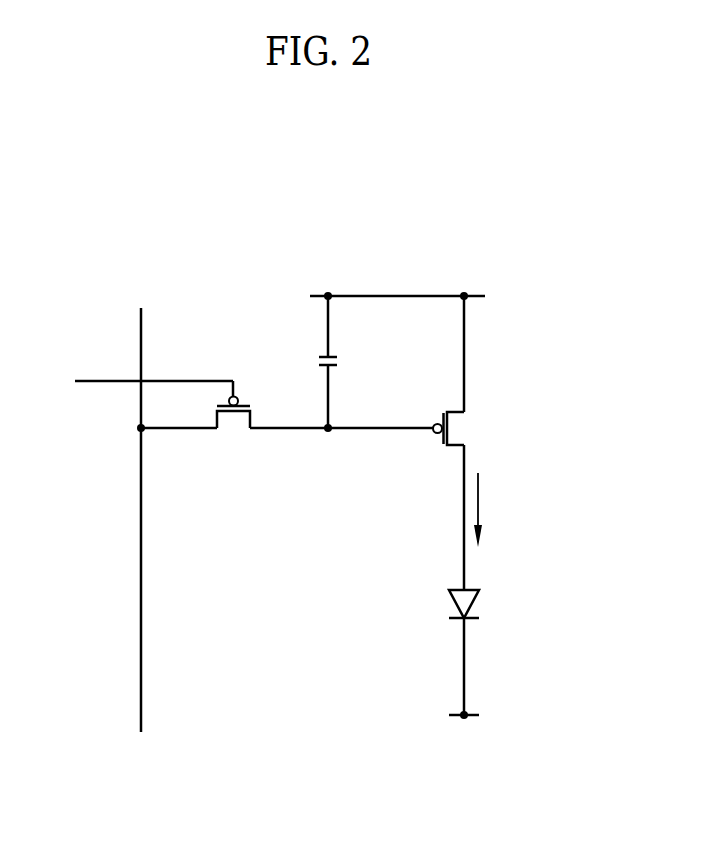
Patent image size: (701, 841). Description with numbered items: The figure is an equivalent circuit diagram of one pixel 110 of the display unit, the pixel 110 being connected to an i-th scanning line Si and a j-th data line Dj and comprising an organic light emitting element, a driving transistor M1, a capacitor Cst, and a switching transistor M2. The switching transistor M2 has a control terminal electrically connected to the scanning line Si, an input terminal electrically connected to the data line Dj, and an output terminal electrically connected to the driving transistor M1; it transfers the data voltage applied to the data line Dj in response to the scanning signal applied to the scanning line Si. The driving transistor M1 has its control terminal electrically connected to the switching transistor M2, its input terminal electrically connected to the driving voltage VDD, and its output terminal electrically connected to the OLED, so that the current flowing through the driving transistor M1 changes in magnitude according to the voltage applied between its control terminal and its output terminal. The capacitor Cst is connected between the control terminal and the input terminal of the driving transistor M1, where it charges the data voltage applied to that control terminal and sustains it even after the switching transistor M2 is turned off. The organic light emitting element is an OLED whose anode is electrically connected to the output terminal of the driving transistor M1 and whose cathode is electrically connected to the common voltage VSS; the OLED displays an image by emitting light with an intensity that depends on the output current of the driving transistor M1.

The pixel 110 is at (330, 174).
The driving transistor M1 is at (465, 428).
The switching transistor M2 is at (233, 429).
The capacitor Cst is at (348, 362).
The organic light emitting diode OLED is at (495, 604).
The driving voltage VDD is at (397, 281).
The common voltage VSS is at (464, 732).
The data line Dj is at (140, 504).
The scanning line Si is at (141, 381).